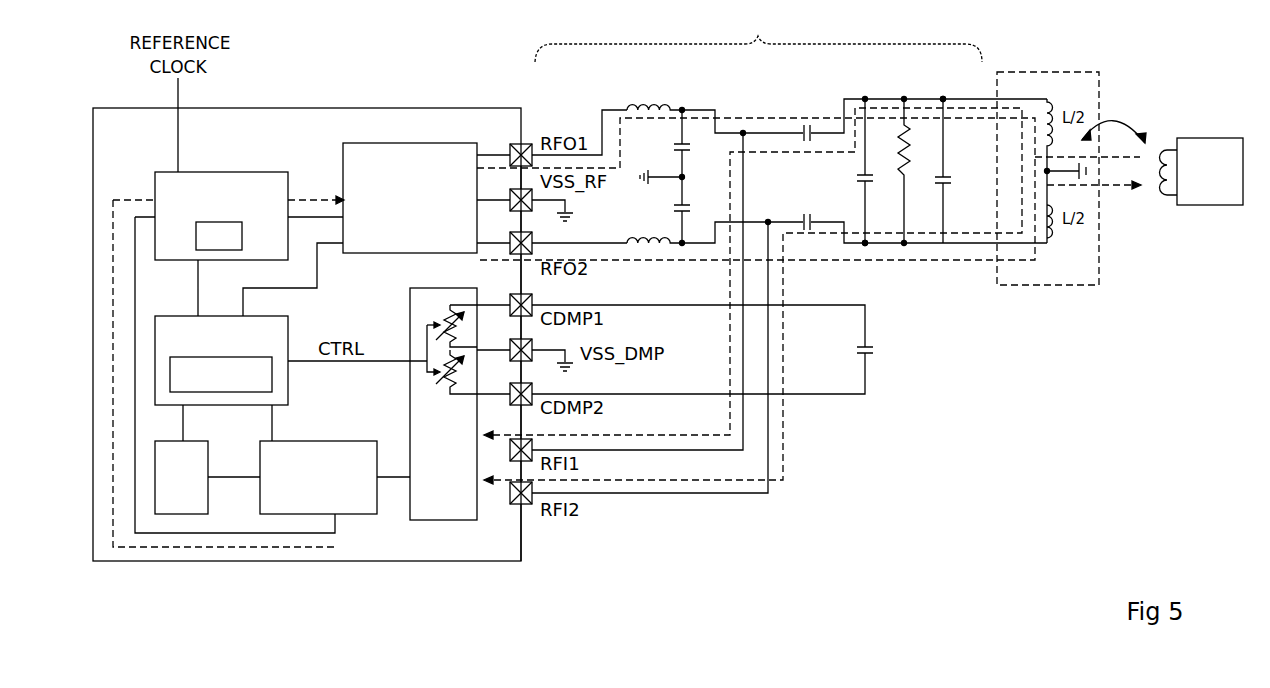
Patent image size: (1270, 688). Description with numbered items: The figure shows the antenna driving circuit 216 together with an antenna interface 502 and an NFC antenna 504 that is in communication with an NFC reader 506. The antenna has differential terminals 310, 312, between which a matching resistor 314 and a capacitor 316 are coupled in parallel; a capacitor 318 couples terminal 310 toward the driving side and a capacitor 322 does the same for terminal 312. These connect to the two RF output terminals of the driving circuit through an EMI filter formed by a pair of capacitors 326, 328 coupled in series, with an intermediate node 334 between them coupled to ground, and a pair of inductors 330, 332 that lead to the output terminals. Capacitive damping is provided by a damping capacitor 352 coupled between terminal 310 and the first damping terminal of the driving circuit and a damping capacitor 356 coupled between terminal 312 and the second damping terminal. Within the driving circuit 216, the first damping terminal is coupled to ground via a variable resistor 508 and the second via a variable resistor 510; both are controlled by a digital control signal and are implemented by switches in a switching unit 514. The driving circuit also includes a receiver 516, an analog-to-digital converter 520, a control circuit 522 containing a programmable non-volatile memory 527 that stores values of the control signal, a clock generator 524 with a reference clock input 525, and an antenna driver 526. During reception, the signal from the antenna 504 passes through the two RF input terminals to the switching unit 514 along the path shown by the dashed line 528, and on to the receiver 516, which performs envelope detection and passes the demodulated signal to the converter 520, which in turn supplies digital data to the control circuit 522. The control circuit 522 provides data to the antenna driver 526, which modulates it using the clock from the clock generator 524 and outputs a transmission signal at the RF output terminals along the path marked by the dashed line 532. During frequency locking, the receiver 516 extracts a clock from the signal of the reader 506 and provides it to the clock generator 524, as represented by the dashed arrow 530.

The antenna interface 502 is at (758, 36).
The NFC antenna 504 is at (1070, 75).
The NFC reader 506 is at (1190, 138).
The antenna driving circuit 216 is at (476, 118).
The reference clock input 525 is at (180, 95).
The clock generator 524 is at (195, 172).
The antenna driver 526 is at (428, 152).
The control circuit 522 is at (282, 330).
The programmable non-volatile memory 527 is at (268, 380).
The analog-to-digital converter 520 is at (195, 448).
The receiver 516 is at (320, 447).
The switching unit 514 is at (428, 520).
The dashed arrow 530 is at (232, 547).
The variable resistor 508 is at (468, 333).
The variable resistor 510 is at (468, 379).
The dashed line 528 is at (790, 435).
The dashed line 532 is at (760, 118).
The inductor 330 is at (660, 103).
The capacitor 326 is at (673, 147).
The intermediate node 334 is at (684, 177).
The capacitor 328 is at (674, 205).
The inductor 332 is at (655, 246).
The capacitor 318 is at (812, 128).
The capacitor 322 is at (812, 215).
The capacitor 316 is at (868, 183).
The resistor 314 is at (907, 150).
The antenna terminal 310 is at (945, 102).
The damping capacitor 352 is at (946, 184).
The antenna terminal 312 is at (868, 247).
The damping capacitor 356 is at (880, 350).